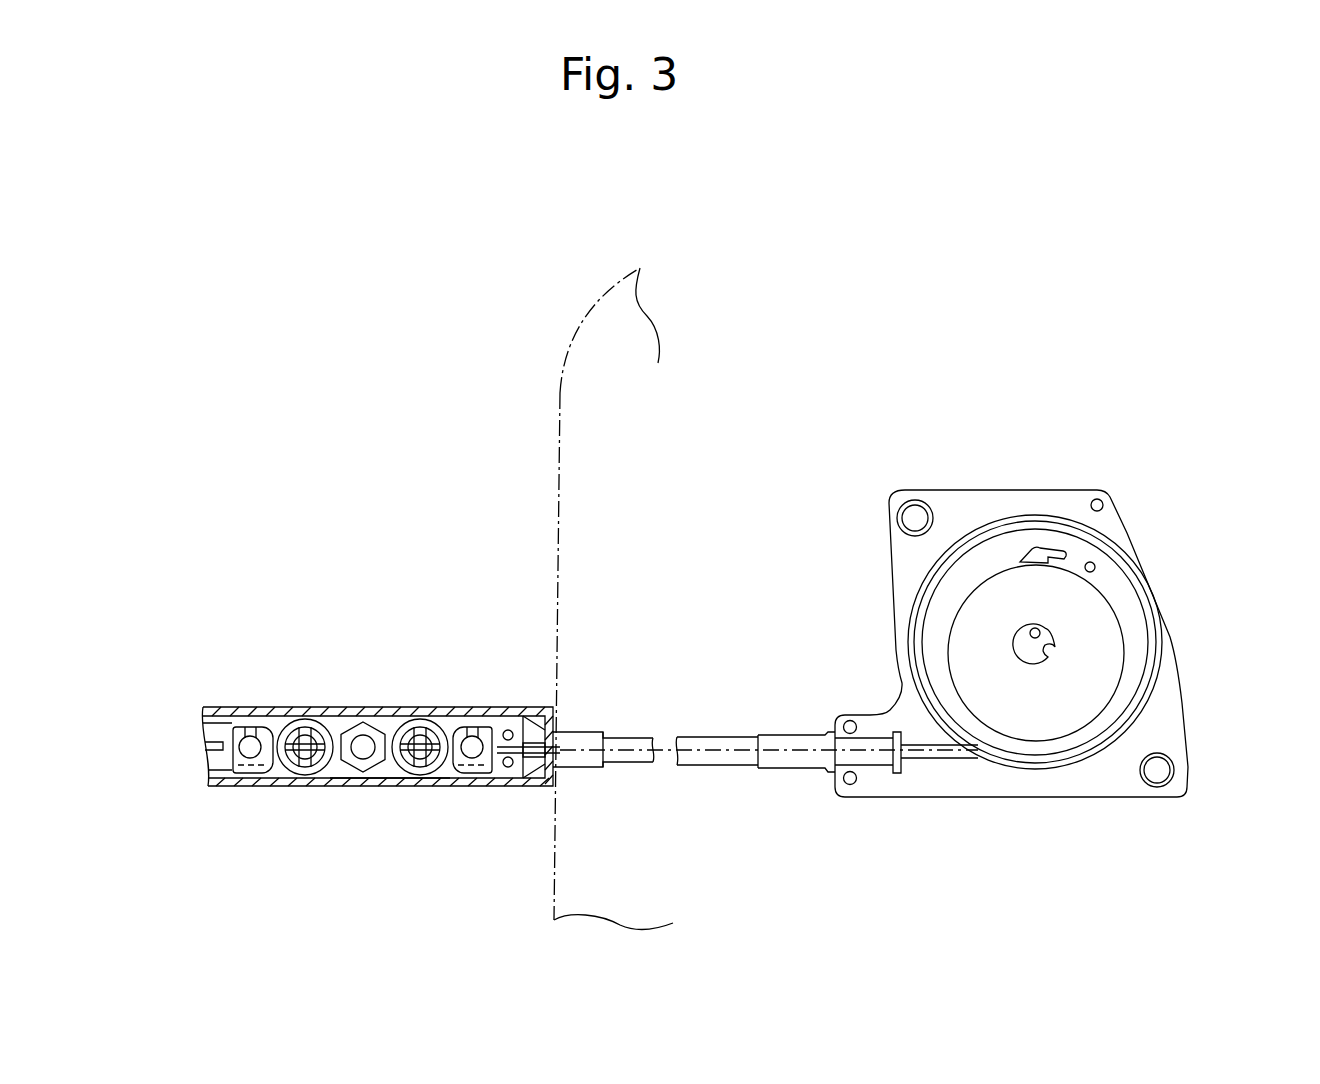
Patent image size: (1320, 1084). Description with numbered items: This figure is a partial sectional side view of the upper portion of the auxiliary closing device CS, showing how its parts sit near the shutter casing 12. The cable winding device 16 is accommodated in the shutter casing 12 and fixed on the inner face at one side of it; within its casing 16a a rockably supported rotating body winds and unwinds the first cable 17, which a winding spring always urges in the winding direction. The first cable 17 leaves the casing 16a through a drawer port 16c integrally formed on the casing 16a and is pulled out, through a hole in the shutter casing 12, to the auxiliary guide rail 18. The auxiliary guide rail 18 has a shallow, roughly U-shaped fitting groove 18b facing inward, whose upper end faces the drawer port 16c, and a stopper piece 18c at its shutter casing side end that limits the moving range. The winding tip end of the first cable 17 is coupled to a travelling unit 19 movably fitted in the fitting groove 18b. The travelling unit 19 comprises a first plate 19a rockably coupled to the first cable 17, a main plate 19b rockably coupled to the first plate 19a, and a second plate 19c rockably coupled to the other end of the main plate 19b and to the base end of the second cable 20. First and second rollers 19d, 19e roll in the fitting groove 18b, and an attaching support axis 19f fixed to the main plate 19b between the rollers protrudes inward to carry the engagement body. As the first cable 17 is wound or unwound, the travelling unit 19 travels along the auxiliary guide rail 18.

The shutter casing 12 is at (568, 399).
The cable winding device 16 is at (1165, 496).
The casing 16a is at (1125, 541).
The drawer port 16c is at (777, 737).
The first cable 17 is at (706, 748).
The auxiliary guide rail 18 is at (307, 834).
The fitting groove 18b is at (233, 731).
The stopper piece 18c is at (533, 786).
The travelling unit 19 is at (491, 708).
The first plate 19a is at (462, 768).
The main plate 19b is at (386, 768).
The second plate 19c is at (258, 765).
The first roller 19d is at (430, 740).
The second roller 19e is at (305, 740).
The attaching support axis 19f is at (363, 740).
The second cable 20 is at (216, 715).
The auxiliary closing device CS is at (1044, 453).